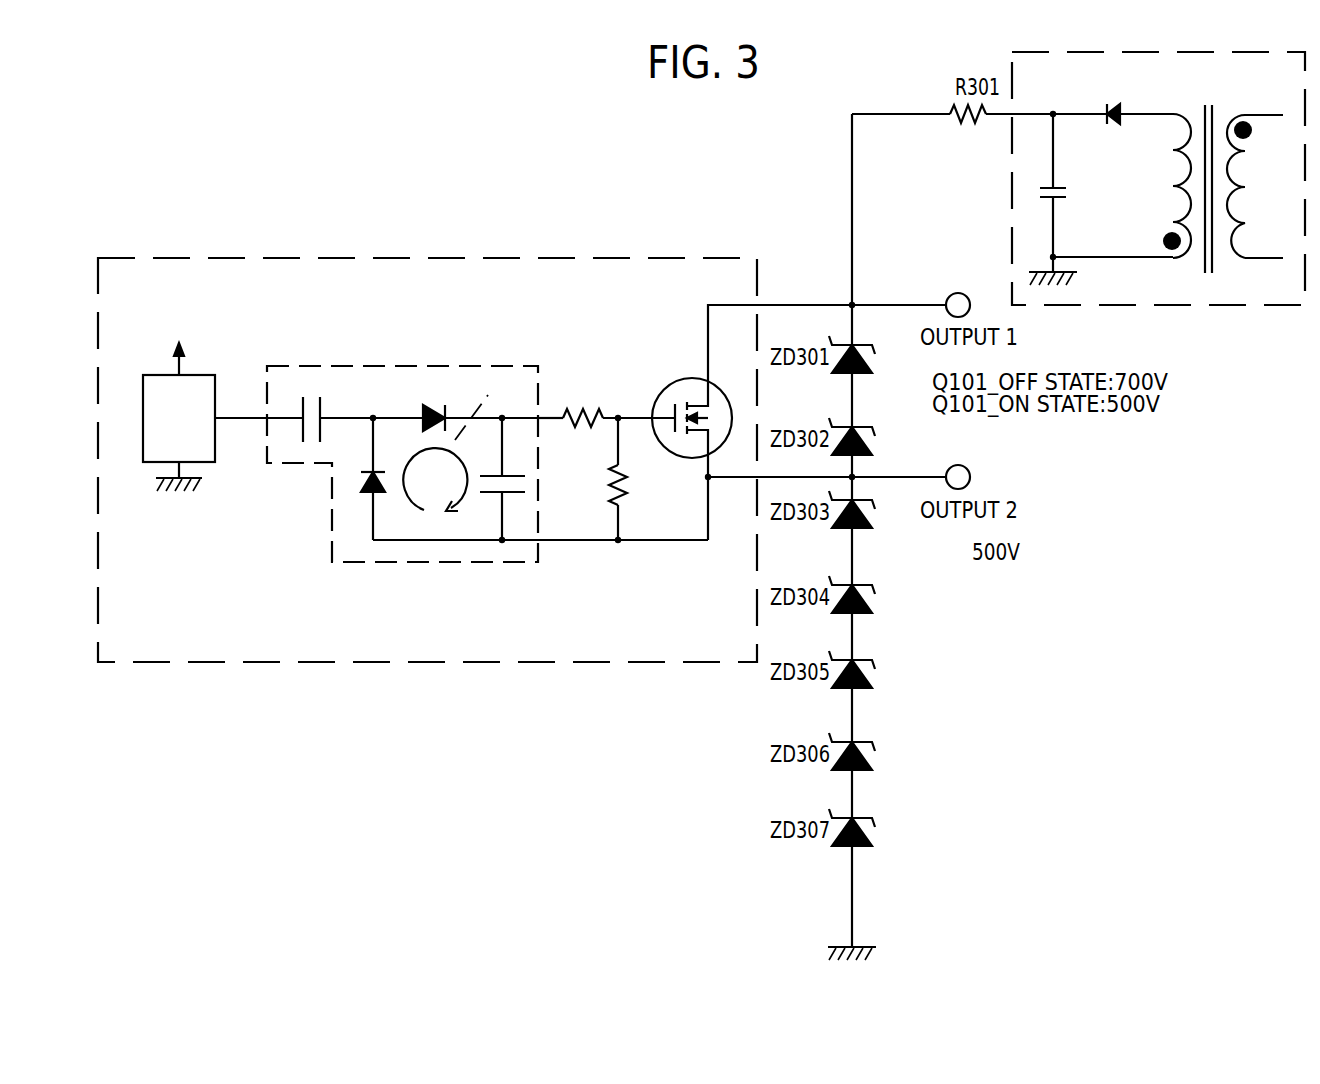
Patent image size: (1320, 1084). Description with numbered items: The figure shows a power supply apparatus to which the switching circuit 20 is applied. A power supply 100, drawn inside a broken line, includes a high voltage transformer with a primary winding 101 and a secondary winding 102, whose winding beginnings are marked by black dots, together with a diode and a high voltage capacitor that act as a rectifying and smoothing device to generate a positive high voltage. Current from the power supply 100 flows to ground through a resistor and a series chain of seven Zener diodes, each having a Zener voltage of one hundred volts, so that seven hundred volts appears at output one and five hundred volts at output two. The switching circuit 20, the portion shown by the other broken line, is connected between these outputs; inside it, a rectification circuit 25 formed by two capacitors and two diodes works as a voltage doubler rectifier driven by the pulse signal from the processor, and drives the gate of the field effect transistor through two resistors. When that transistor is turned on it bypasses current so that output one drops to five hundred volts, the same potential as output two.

The switching circuit 20 is at (378, 662).
The rectification circuit 25 is at (388, 366).
The power supply 100 is at (1012, 70).
The primary winding 101 is at (1253, 258).
The secondary winding 102 is at (1175, 258).